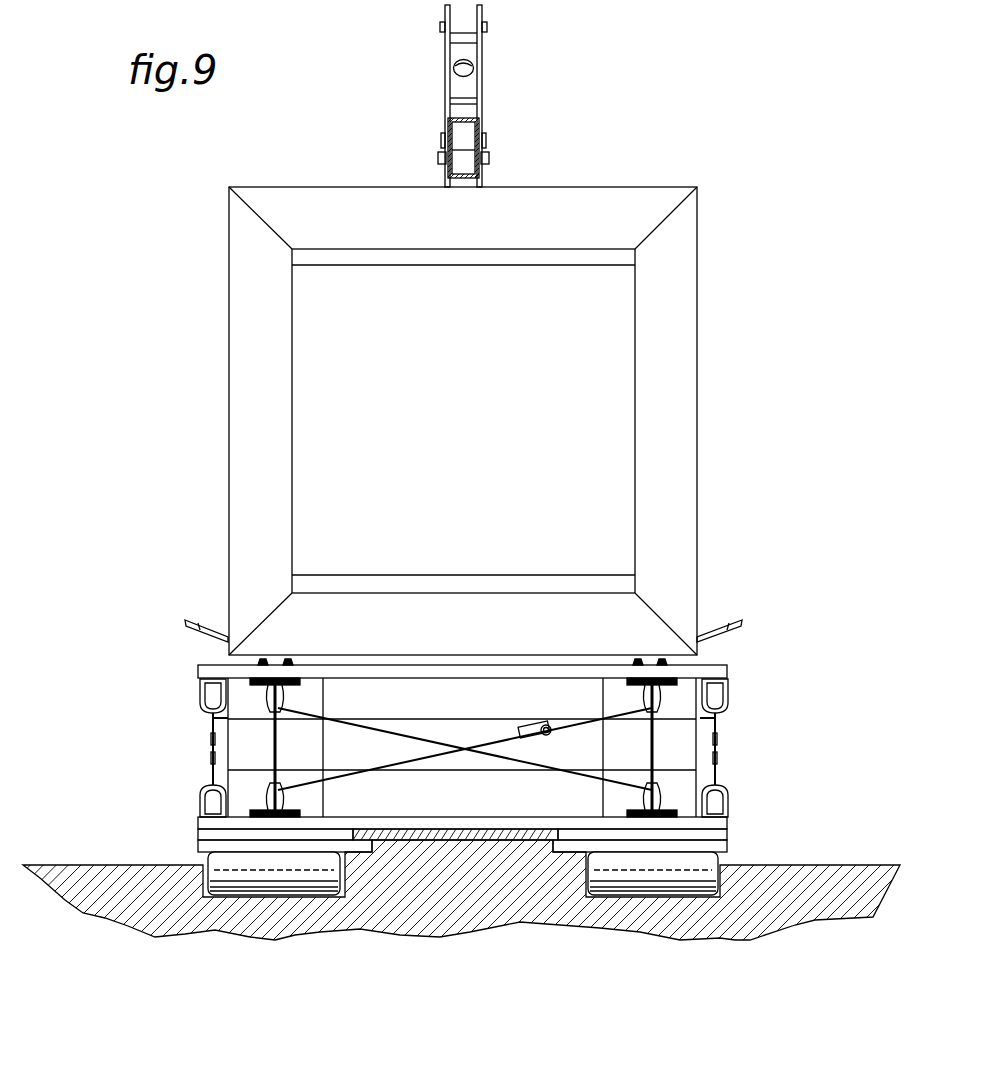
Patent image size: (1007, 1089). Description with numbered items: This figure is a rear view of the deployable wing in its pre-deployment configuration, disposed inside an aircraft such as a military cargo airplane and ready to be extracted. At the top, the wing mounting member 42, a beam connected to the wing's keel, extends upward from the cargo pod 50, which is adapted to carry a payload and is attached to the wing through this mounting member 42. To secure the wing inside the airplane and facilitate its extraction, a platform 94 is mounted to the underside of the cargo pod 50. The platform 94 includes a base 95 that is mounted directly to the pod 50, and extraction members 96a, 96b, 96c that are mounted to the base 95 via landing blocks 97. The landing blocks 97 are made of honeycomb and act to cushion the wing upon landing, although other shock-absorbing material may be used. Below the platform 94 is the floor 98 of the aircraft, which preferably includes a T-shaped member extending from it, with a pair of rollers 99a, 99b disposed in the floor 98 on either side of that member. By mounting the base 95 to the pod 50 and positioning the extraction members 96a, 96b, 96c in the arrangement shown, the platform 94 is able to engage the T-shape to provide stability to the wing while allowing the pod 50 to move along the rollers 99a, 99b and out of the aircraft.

The wing mounting member 42 is at (462, 118).
The cargo pod 50 is at (466, 434).
The base 95 is at (715, 665).
The platform 94 is at (762, 708).
The landing blocks 97 is at (247, 707).
The extraction member 96a is at (725, 823).
The extraction member 96b is at (725, 835).
The extraction member 96c is at (727, 846).
The floor 98 is at (467, 898).
The roller 99a is at (276, 868).
The roller 99b is at (661, 873).